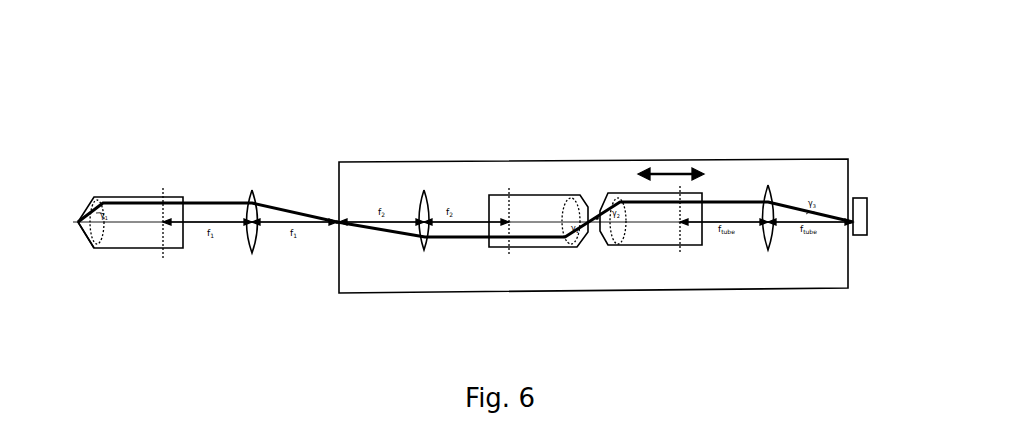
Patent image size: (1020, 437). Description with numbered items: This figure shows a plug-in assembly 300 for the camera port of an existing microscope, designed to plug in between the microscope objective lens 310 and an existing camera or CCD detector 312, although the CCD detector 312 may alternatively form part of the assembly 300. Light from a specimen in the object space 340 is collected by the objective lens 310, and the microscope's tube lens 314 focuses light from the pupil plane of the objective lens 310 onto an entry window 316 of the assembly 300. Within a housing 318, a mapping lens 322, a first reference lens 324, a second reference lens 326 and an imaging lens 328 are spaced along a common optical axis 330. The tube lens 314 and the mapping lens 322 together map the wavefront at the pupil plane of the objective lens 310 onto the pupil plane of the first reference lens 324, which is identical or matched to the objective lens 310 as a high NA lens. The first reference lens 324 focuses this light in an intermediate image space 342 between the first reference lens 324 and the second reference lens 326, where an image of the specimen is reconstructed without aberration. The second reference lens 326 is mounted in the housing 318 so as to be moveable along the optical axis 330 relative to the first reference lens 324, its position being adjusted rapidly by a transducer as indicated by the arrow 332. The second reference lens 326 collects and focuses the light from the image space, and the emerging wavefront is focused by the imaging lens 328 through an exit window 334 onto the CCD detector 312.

The plug-in assembly 300 is at (776, 95).
The microscope objective lens 310 is at (132, 198).
The CCD detector 312 is at (860, 198).
The tube lens 314 is at (253, 195).
The entry window 316 is at (337, 223).
The housing 318 is at (377, 160).
The mapping lens 322 is at (423, 242).
The first reference lens 324 is at (547, 247).
The second reference lens 326 is at (638, 238).
The imaging lens 328 is at (767, 238).
The optical axis 330 is at (472, 217).
The arrow 332 is at (672, 172).
The exit window 334 is at (847, 230).
The object space 340 is at (77, 238).
The intermediate image space 342 is at (597, 206).